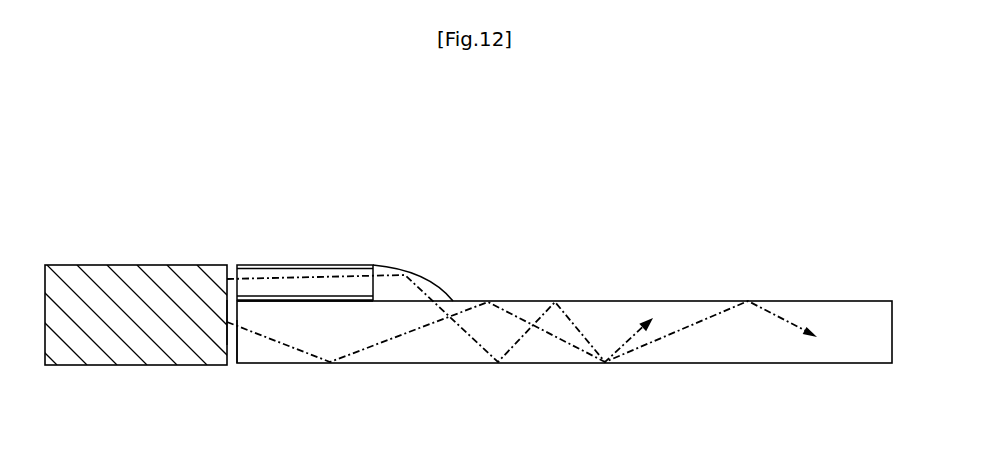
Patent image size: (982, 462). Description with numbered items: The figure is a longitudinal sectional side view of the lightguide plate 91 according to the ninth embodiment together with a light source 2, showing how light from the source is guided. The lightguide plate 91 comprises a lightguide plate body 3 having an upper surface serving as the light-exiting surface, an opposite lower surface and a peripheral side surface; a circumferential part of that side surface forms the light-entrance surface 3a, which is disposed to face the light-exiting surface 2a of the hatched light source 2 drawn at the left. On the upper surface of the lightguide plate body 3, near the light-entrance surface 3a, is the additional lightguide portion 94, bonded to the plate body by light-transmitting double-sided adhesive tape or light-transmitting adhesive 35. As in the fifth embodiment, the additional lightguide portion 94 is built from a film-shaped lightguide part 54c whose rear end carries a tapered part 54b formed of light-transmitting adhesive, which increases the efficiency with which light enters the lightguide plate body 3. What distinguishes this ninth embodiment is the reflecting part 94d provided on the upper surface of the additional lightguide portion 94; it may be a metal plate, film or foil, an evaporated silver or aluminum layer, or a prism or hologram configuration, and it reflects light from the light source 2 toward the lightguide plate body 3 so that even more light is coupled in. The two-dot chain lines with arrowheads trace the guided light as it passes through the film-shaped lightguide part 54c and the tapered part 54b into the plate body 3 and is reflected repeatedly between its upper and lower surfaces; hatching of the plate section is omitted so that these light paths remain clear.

The light source 2 is at (123, 265).
The light-exiting surface 2a is at (228, 330).
The lightguide plate body 3 is at (642, 365).
The light-entrance surface 3a is at (233, 349).
The light-transmitting adhesive 35 is at (347, 302).
The additional lightguide portion 94 is at (323, 222).
The reflecting part 94d is at (270, 265).
The film-shaped lightguide part 54c is at (323, 287).
The tapered part 54b is at (433, 287).
The lightguide plate 91 is at (735, 195).